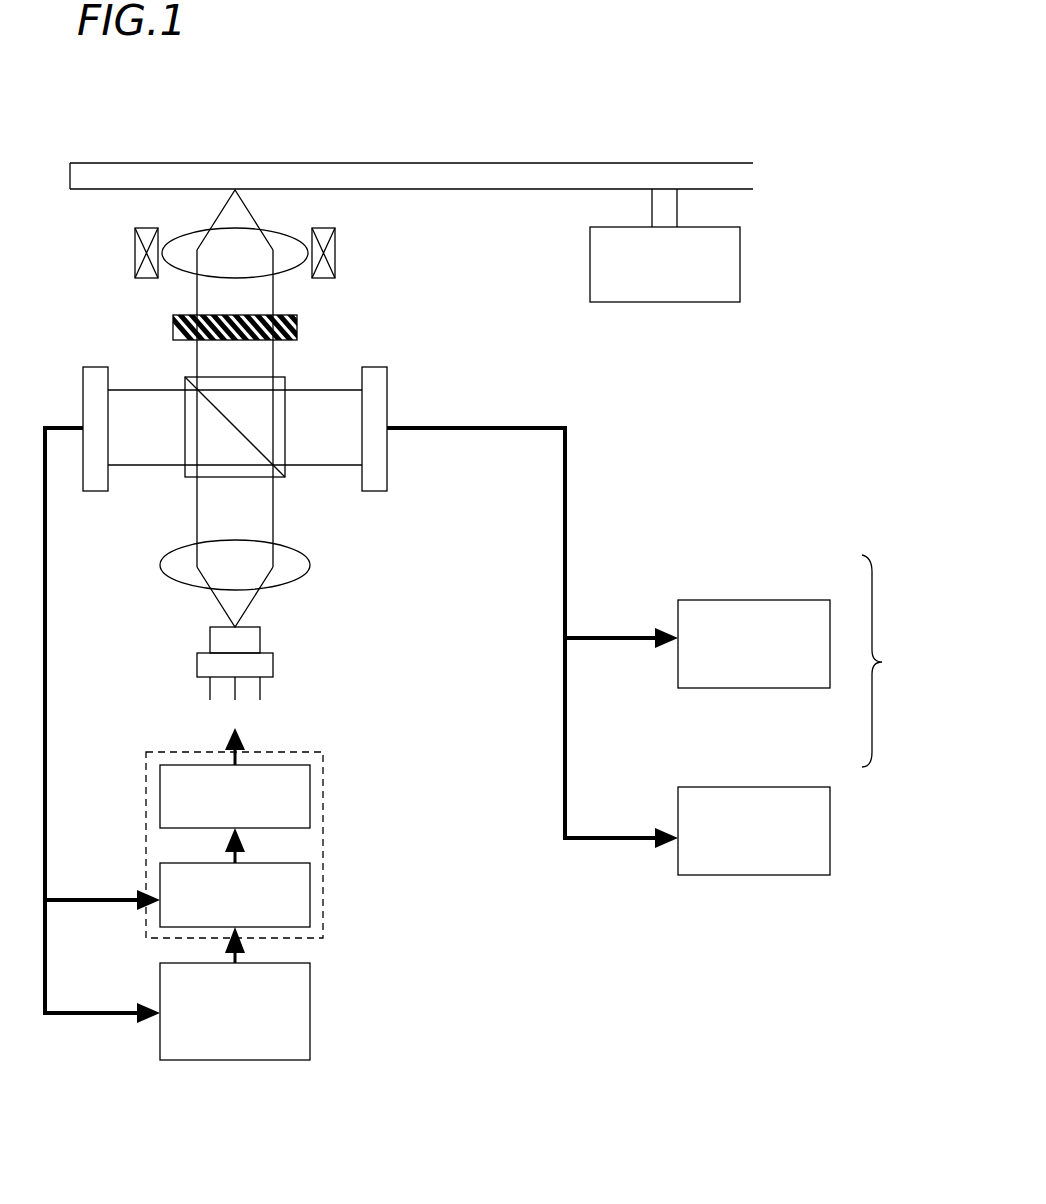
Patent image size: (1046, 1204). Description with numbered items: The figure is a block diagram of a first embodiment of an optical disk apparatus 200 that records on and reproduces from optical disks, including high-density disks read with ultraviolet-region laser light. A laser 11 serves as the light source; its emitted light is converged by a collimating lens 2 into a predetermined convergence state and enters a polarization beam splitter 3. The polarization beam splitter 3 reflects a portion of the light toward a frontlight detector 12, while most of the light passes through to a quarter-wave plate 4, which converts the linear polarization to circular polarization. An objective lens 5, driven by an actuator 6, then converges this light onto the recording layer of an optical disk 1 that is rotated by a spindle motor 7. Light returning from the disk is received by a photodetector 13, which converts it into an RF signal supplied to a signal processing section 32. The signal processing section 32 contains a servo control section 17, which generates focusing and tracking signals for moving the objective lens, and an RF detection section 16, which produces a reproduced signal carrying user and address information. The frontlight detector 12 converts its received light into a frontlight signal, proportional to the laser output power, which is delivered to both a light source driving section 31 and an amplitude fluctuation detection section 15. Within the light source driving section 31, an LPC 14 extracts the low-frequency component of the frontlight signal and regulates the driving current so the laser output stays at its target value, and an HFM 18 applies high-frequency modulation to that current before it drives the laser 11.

The optical disk apparatus 200 is at (734, 121).
The optical disk 1 is at (487, 163).
The spindle motor 7 is at (660, 302).
The objective lens 5 is at (282, 230).
The actuator 6 is at (320, 278).
The quarter-wave plate 4 is at (173, 330).
The frontlight detector 12 is at (92, 367).
The photodetector 13 is at (380, 360).
The polarization beam splitter 3 is at (277, 475).
The collimating lens 2 is at (288, 583).
The laser 11 is at (268, 678).
The light source driving section 31 is at (323, 785).
The HFM 18 is at (295, 763).
The LPC 14 is at (282, 863).
The amplitude fluctuation detection section 15 is at (300, 962).
The signal processing section 32 is at (801, 715).
The servo control section 17 is at (788, 600).
The RF detection section 16 is at (787, 787).